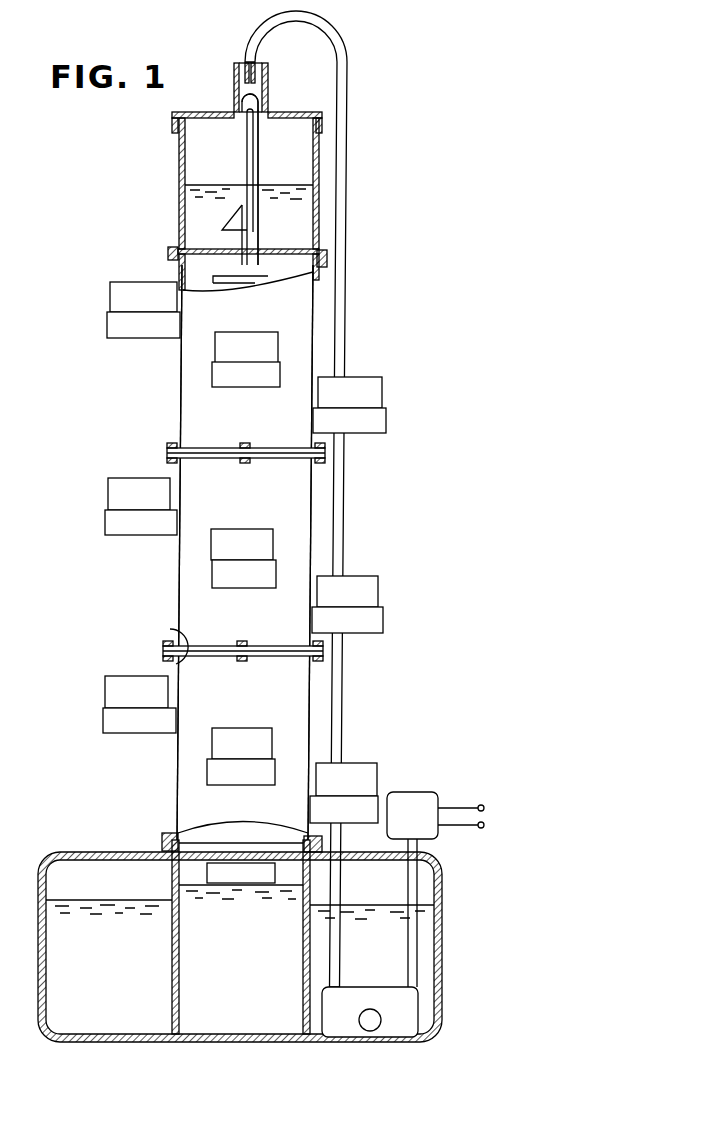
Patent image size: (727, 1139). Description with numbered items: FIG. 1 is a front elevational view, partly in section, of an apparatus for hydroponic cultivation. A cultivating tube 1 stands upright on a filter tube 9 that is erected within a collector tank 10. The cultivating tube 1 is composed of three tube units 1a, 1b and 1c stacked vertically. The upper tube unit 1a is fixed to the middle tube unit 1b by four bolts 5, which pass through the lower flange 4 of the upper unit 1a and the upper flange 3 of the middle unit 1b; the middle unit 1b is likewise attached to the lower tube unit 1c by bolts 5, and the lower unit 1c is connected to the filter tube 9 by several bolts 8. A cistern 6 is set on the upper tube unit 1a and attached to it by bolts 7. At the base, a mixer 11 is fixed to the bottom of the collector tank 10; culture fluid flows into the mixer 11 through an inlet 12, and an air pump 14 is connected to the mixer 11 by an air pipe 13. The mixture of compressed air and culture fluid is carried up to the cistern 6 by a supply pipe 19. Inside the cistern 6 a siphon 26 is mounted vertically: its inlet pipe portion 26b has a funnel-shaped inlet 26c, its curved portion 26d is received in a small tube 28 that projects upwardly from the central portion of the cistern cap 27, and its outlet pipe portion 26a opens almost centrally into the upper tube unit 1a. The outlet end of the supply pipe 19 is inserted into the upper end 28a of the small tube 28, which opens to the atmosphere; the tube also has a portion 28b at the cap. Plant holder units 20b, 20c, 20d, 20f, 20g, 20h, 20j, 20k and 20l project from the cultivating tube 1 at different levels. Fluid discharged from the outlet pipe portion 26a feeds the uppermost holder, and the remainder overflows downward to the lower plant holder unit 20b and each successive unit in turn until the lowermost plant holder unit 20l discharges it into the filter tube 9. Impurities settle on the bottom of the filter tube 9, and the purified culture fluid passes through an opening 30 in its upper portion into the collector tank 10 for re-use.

The cultivating tube 1 is at (178, 389).
The upper tube unit 1a is at (308, 311).
The middle tube unit 1b is at (182, 590).
The lower tube unit 1c is at (183, 772).
The upper flange 3 is at (184, 455).
The lower flange 4 is at (178, 645).
The bolts 5 is at (167, 457).
The cistern 6 is at (185, 185).
The bolts 7 is at (171, 248).
The bolts 8 is at (167, 834).
The filter tube 9 is at (175, 884).
The collector tank 10 is at (60, 855).
The mixer 11 is at (368, 990).
The inlet 12 is at (381, 1019).
The air pipe 13 is at (418, 888).
The air pump 14 is at (422, 808).
The supply pipe 19 is at (337, 719).
The lower plant holder unit 20b is at (118, 336).
The plant holder unit 20c is at (214, 371).
The plant holder unit 20d is at (387, 407).
The plant holder unit 20f is at (118, 535).
The plant holder unit 20g is at (216, 555).
The plant holder unit 20h is at (383, 600).
The plant holder unit 20j is at (110, 734).
The plant holder unit 20k is at (218, 748).
The lowermost plant holder unit 20l is at (365, 779).
The siphon 26 is at (260, 152).
The outlet pipe portion 26a is at (259, 226).
The inlet pipe portion 26b is at (247, 140).
The funnel-shaped inlet 26c is at (238, 228).
The curved portion 26d is at (256, 100).
The cistern cap 27 is at (196, 112).
The small tube 28 is at (234, 70).
The upper end 28a is at (264, 66).
The neck opening 28b is at (262, 112).
The opening 30 is at (229, 884).